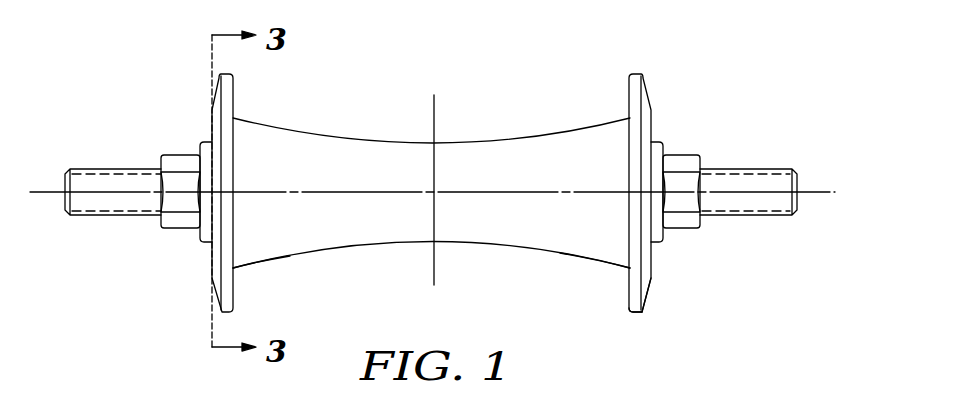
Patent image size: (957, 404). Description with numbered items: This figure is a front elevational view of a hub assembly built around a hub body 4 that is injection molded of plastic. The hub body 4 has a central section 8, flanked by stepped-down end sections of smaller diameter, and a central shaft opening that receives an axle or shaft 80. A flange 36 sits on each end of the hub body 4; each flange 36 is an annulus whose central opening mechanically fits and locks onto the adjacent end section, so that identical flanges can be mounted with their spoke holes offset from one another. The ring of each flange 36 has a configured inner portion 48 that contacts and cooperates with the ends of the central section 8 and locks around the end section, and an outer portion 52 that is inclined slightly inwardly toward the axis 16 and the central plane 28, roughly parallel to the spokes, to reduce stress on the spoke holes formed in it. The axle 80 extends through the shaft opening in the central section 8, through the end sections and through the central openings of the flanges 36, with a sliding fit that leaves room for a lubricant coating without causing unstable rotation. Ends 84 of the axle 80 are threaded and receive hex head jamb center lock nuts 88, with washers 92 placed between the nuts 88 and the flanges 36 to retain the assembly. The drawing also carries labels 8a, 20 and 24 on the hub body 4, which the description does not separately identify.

The hub body 4 is at (495, 130).
The central section 8 is at (388, 142).
The hub body lower wall portion 8a is at (236, 268).
The axis 16 is at (812, 192).
The central portion of hub body 20 is at (465, 227).
The flared end portion of hub body 24 is at (549, 250).
The central plane 28 is at (432, 208).
The flange 36 is at (244, 306).
The inner portion 48 is at (648, 287).
The outer portion 52 is at (637, 315).
The axle 80 is at (770, 205).
The ends of the axle 84 is at (97, 216).
The hex head jamb center lock nuts 88 is at (173, 160).
The washers 92 is at (208, 142).